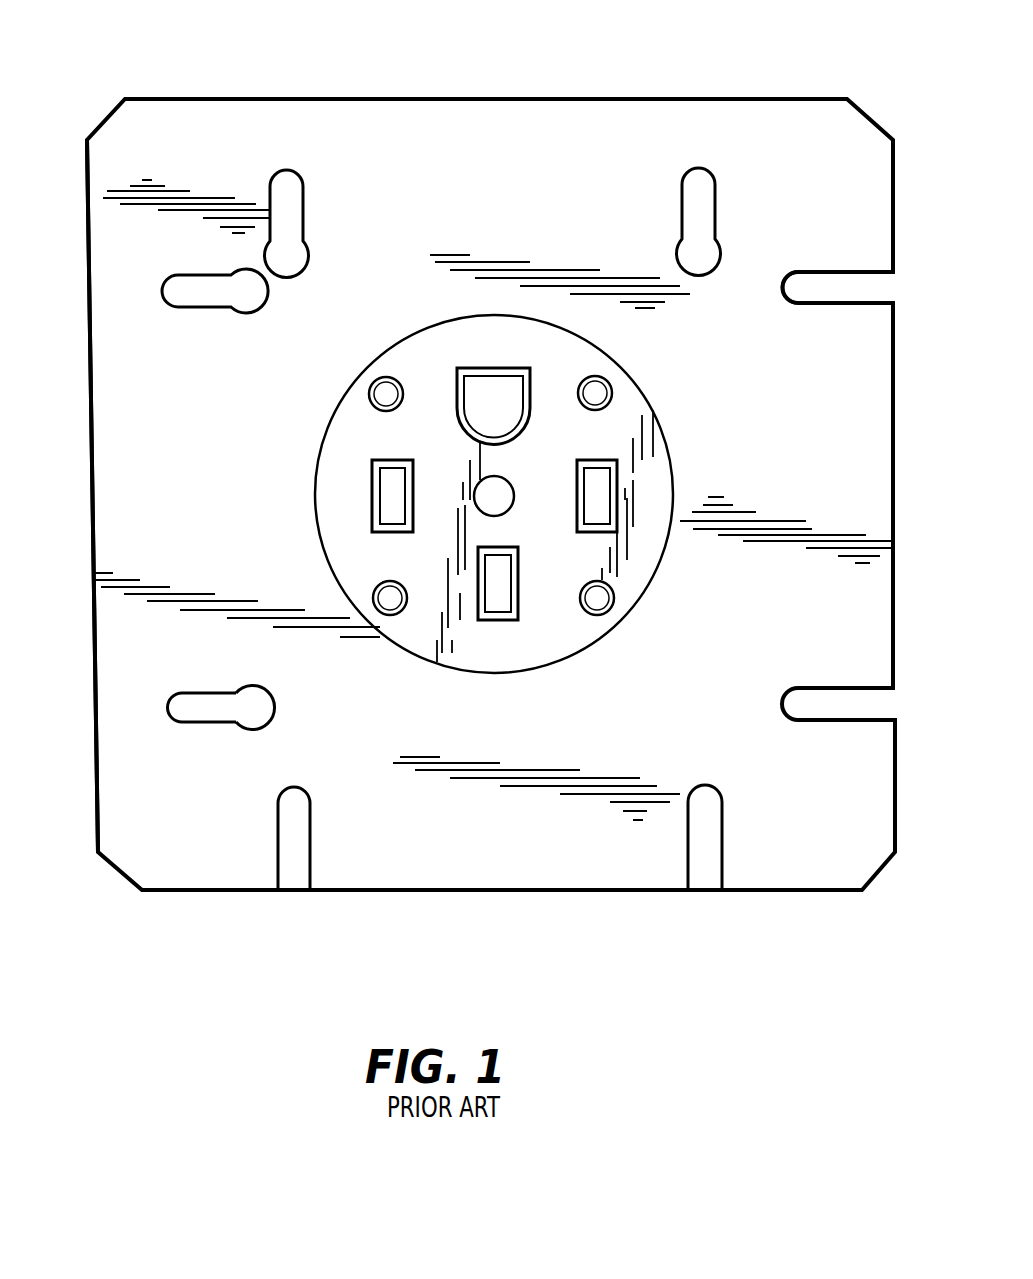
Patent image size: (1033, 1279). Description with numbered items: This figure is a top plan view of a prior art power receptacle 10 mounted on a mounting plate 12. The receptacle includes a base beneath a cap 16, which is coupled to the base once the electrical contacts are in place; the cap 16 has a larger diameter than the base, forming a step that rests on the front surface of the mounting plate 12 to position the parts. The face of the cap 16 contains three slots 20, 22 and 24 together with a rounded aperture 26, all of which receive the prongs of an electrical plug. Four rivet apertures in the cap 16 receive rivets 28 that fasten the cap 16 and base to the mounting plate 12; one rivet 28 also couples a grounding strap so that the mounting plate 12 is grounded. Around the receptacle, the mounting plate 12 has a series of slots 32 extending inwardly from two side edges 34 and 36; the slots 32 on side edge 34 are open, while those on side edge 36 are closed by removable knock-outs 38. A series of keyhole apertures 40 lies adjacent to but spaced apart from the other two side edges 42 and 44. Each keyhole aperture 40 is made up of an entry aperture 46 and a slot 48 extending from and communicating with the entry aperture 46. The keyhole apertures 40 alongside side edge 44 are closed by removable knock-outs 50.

The power receptacle 10 is at (366, 70).
The mounting plate 12 is at (862, 480).
The cap 16 is at (670, 452).
The slot 20 is at (615, 497).
The slot 22 is at (498, 622).
The slot 24 is at (372, 493).
The rounded aperture 26 is at (490, 397).
The rivet 28 is at (378, 382).
The slot 32 is at (897, 280).
The side edge 34 is at (895, 421).
The side edge 36 is at (542, 889).
The removable knock-out 38 is at (292, 877).
The keyhole aperture 40 is at (722, 250).
The side edge 42 is at (95, 735).
The side edge 44 is at (202, 99).
The entry aperture 46 is at (253, 712).
The slot 48 is at (205, 713).
The removable knock-out 50 is at (700, 197).